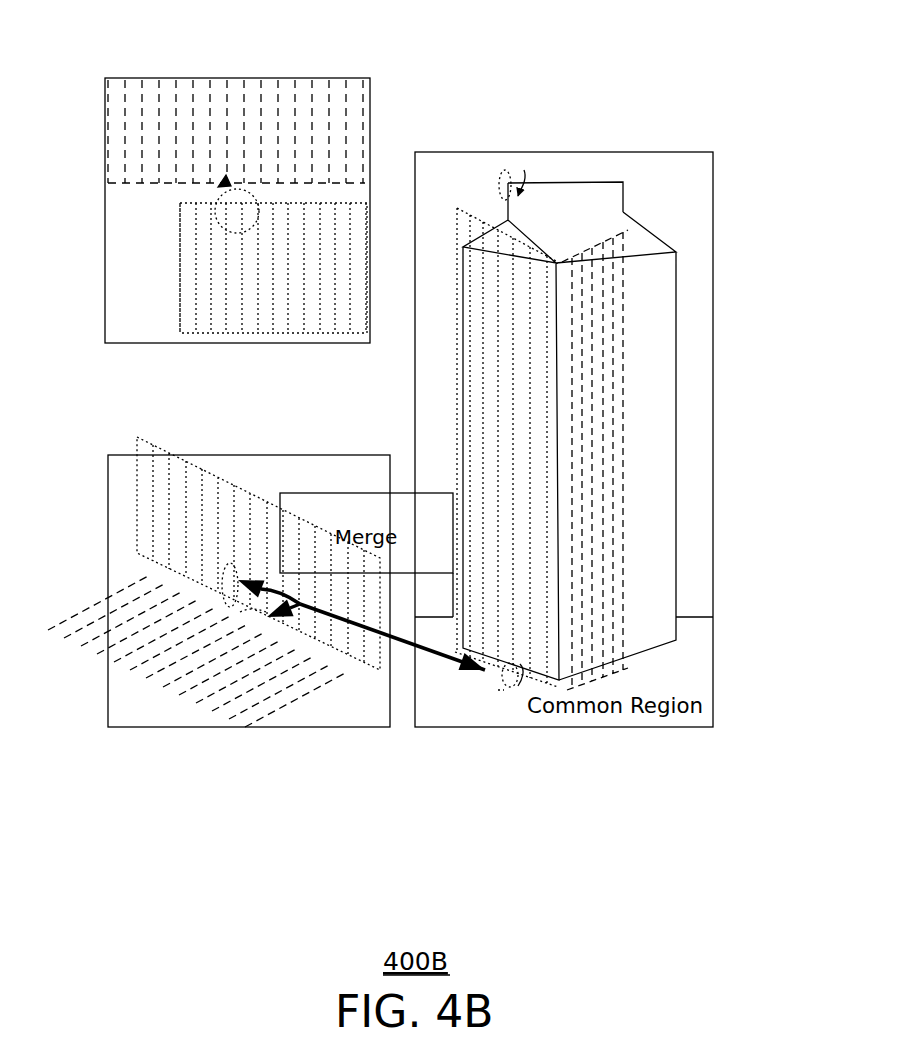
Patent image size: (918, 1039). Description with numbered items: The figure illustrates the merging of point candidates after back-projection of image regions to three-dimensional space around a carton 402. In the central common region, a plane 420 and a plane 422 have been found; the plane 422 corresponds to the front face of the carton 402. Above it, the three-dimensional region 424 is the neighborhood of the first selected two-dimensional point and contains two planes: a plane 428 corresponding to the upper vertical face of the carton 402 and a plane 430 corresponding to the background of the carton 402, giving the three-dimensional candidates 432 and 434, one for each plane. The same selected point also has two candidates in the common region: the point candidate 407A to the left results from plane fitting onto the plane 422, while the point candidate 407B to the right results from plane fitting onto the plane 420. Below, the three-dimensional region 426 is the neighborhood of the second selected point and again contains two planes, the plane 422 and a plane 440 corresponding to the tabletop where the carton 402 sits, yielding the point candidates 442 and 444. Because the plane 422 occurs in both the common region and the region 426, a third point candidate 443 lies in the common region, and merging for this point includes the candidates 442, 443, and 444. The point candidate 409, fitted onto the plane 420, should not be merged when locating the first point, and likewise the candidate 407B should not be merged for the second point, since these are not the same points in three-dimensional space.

The carton 402 is at (678, 448).
The point candidate 407A is at (507, 170).
The point candidate 407B is at (520, 166).
The point candidate 409 is at (511, 690).
The plane 420 is at (624, 318).
The plane 422 is at (456, 218).
The 3D region 424 is at (170, 78).
The 3D region 426 is at (126, 728).
The plane 428 is at (180, 271).
The plane 430 is at (683, 172).
The 3D candidate 432 is at (216, 188).
The 3D candidate 434 is at (215, 215).
The plane 440 is at (95, 654).
The 3D point candidate 442 is at (222, 567).
The point candidate 443 is at (501, 700).
The 3D point candidate 444 is at (264, 626).